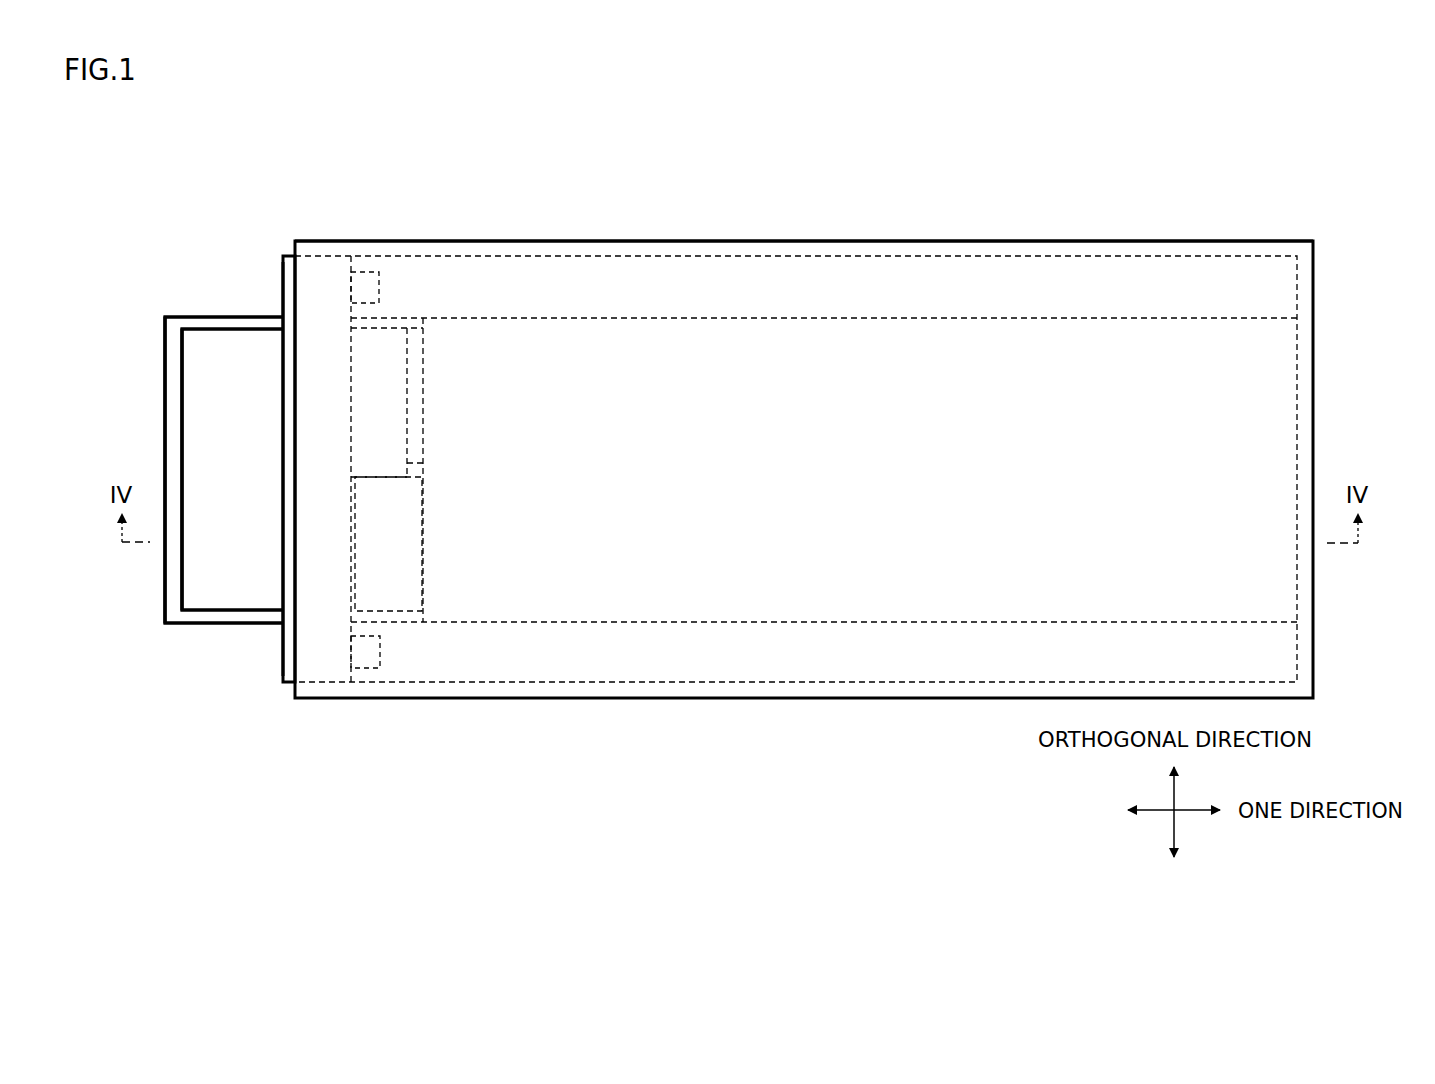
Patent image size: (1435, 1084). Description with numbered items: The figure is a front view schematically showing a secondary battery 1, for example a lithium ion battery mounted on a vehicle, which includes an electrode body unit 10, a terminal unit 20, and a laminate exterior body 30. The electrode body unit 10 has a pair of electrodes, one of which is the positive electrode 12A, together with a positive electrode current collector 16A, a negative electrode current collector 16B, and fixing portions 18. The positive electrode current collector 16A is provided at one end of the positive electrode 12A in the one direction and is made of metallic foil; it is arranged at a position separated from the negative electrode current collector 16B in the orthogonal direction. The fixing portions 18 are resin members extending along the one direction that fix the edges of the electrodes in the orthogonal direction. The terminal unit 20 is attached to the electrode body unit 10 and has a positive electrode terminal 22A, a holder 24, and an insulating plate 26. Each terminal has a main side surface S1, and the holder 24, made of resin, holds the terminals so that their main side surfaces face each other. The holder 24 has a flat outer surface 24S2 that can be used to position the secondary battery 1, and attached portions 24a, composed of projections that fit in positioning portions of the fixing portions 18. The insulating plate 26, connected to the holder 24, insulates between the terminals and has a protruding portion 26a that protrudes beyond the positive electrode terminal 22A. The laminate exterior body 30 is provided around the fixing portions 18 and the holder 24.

The secondary battery 1 is at (315, 158).
The electrode body unit 10 is at (707, 253).
The positive electrode 12A is at (829, 362).
The fixing portions 18 is at (962, 280).
The positive electrode current collector 16A is at (407, 543).
The negative electrode current collector 16B is at (414, 333).
The terminal unit 20 is at (163, 314).
The positive electrode terminal 22A is at (220, 343).
The holder 24 is at (288, 255).
The attached portions 24a is at (365, 270).
The outer surface 24S2 is at (283, 276).
The insulating plate 26 is at (175, 328).
The protruding portion 26a is at (172, 434).
The laminate exterior body 30 is at (513, 237).
The main side surface S1 is at (210, 385).